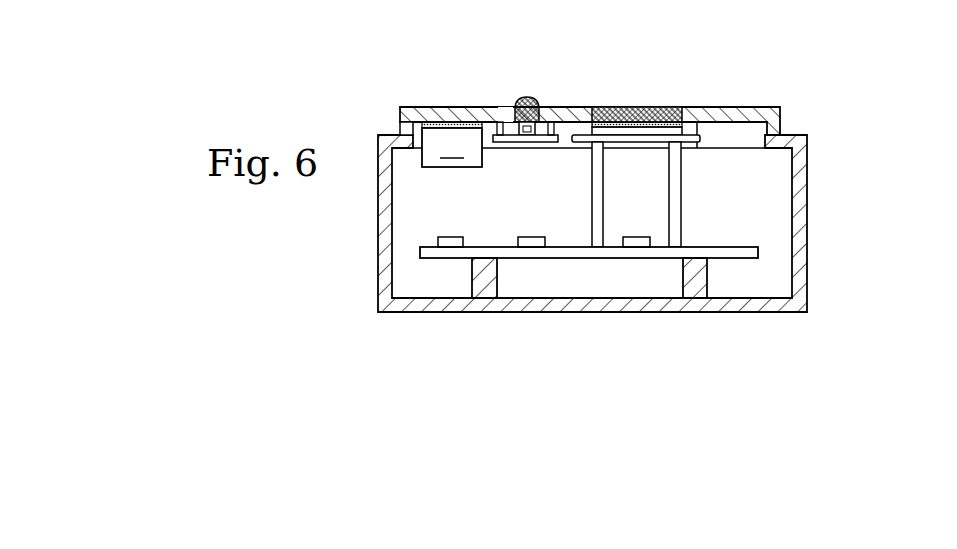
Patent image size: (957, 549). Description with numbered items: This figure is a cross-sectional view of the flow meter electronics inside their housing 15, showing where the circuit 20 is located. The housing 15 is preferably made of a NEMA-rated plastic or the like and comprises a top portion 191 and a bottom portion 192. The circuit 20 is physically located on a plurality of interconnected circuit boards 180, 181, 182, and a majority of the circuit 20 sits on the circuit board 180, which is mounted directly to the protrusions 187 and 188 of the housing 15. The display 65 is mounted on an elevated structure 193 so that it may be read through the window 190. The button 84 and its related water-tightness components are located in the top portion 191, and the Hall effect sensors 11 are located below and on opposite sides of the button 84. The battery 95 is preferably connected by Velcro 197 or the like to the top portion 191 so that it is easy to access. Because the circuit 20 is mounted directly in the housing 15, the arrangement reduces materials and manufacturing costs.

The housing 15 is at (805, 242).
The circuit 20 is at (497, 197).
The display 65 is at (656, 107).
The button 84 is at (528, 99).
The Hall effect sensors 11 is at (557, 107).
The battery 95 is at (452, 147).
The circuit board 180 is at (431, 259).
The circuit board 181 is at (496, 108).
The circuit board 182 is at (713, 107).
The protrusion 187 is at (497, 278).
The protrusion 188 is at (707, 278).
The window 190 is at (603, 107).
The top portion 191 is at (838, 104).
The bottom portion 192 is at (862, 180).
The elevated structure 193 is at (803, 257).
The Velcro 197 is at (445, 108).